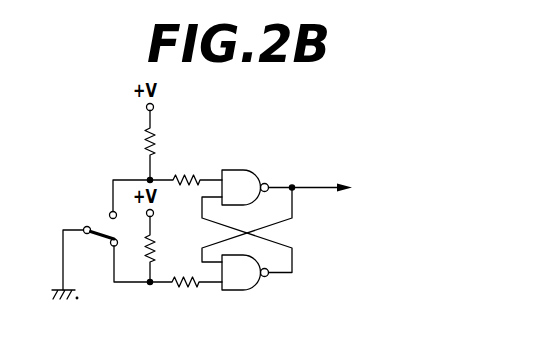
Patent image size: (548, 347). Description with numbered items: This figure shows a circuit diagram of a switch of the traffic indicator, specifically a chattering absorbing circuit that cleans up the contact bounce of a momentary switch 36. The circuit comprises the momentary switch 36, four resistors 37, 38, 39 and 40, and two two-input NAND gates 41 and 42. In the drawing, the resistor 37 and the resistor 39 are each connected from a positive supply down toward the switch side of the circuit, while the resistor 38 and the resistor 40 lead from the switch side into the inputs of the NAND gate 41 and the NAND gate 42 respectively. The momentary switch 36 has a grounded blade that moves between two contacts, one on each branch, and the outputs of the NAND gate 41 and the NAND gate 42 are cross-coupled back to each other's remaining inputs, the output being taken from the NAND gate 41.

The momentary switch 36 is at (103, 222).
The resistor 37 is at (146, 150).
The resistor 38 is at (191, 169).
The resistor 39 is at (153, 256).
The resistor 40 is at (181, 287).
The 2-input NAND gate 41 is at (264, 169).
The 2-input NAND gate 42 is at (244, 287).